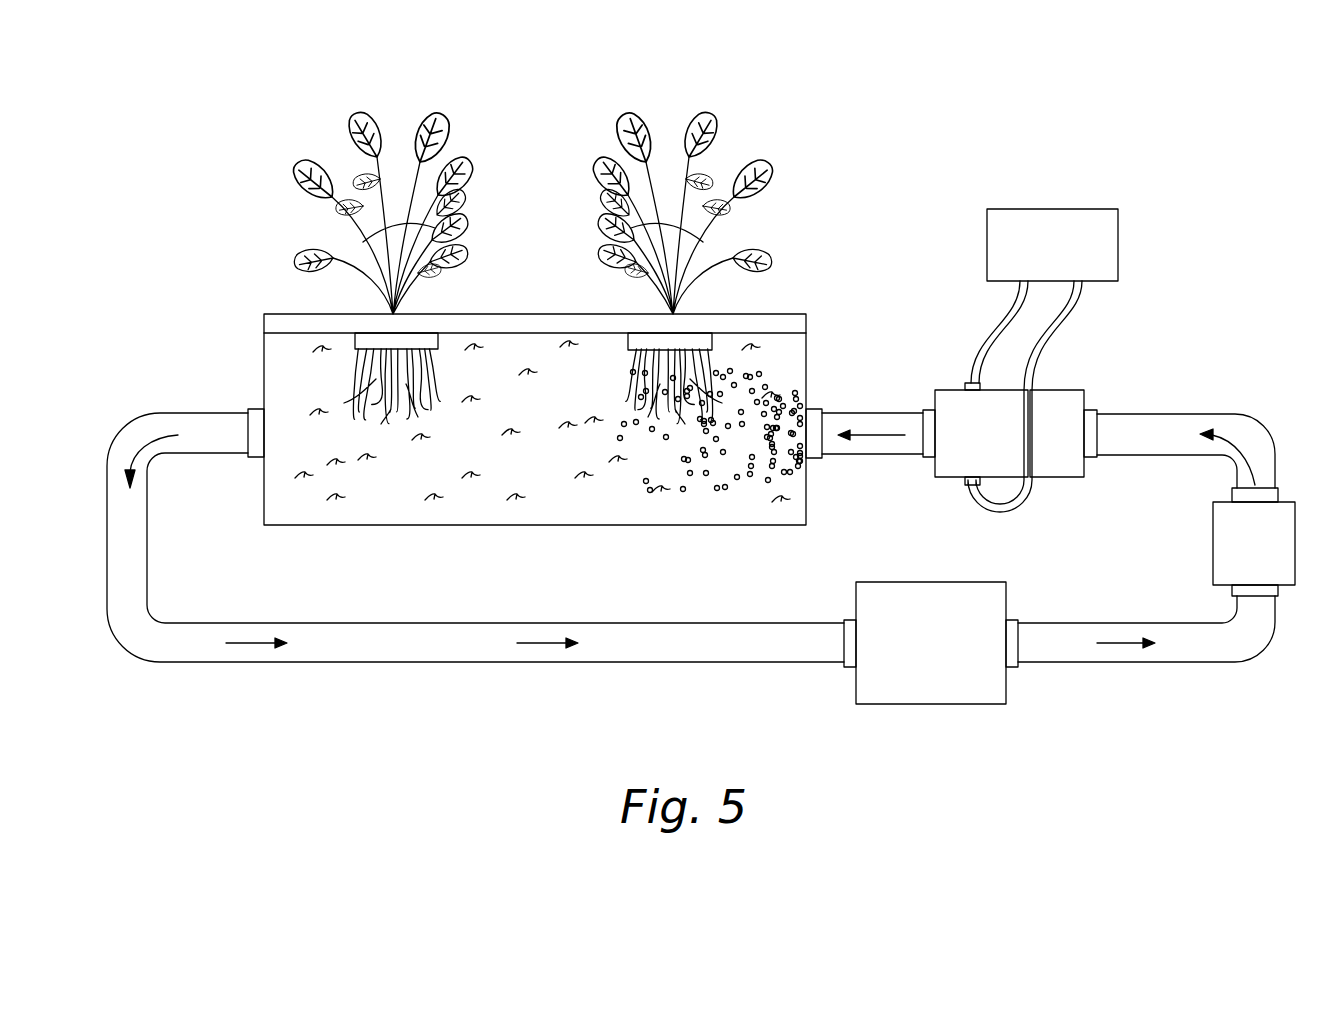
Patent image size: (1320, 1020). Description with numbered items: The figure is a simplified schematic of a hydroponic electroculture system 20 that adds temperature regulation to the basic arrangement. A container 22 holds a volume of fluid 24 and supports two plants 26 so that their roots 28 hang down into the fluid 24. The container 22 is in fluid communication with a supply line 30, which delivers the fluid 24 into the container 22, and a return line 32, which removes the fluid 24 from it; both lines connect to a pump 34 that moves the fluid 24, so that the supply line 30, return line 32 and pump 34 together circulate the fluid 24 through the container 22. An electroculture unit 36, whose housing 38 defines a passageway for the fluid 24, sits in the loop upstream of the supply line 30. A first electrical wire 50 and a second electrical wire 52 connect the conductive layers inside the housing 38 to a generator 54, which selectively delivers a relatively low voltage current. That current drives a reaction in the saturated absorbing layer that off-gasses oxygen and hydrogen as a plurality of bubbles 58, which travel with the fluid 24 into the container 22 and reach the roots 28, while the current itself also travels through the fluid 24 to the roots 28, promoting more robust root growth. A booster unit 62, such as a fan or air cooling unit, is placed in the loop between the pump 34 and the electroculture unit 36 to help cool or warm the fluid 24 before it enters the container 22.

The hydroponic electroculture system 20 is at (233, 110).
The container 22 is at (262, 341).
The fluid 24 is at (395, 515).
The plant 26 is at (367, 120).
The roots 28 is at (430, 370).
The supply line 30 is at (865, 412).
The return line 32 is at (153, 427).
The pump 34 is at (912, 704).
The electroculture unit 36 is at (1047, 482).
The housing 38 is at (1063, 405).
The first electrical wire 50 is at (995, 333).
The second electrical wire 52 is at (1075, 315).
The generator 54 is at (1043, 220).
The bubbles 58 is at (613, 492).
The booster unit 62 is at (1218, 563).